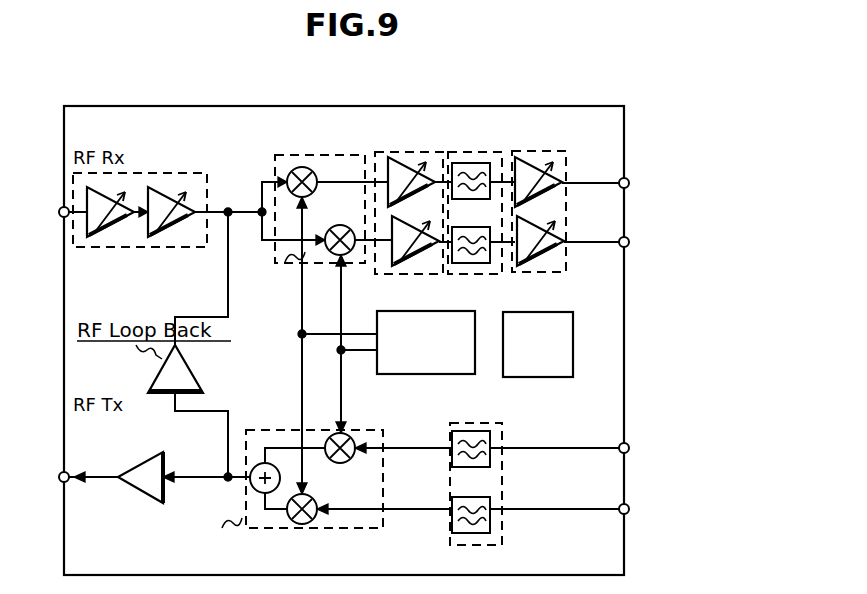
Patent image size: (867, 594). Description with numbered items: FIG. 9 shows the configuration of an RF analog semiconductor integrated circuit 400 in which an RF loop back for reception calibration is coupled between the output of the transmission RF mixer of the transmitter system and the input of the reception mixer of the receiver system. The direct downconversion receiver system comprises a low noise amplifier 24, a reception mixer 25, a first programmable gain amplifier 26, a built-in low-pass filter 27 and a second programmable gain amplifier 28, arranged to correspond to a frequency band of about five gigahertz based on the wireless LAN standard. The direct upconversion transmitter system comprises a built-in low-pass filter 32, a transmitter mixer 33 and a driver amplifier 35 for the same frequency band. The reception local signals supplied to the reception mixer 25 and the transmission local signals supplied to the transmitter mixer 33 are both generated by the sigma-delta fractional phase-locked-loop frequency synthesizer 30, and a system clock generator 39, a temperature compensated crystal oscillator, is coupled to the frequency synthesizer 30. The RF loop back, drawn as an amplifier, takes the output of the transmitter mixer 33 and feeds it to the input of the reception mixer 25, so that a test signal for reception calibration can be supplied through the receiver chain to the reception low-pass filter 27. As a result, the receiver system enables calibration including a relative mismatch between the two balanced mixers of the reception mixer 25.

The RF analog semiconductor integrated circuit 400 is at (612, 106).
The low noise amplifier 24 is at (118, 250).
The reception mixer 25 is at (290, 153).
The programmable gain amplifier 26 is at (390, 153).
The low-pass filter 27 is at (455, 153).
The programmable gain amplifier 28 is at (520, 150).
The PLL frequency synthesizer 30 is at (460, 374).
The low-pass filter 32 is at (480, 425).
The transmitter mixer 33 is at (378, 431).
The driver amplifier 35 is at (142, 466).
The system clock generator 39 is at (573, 314).